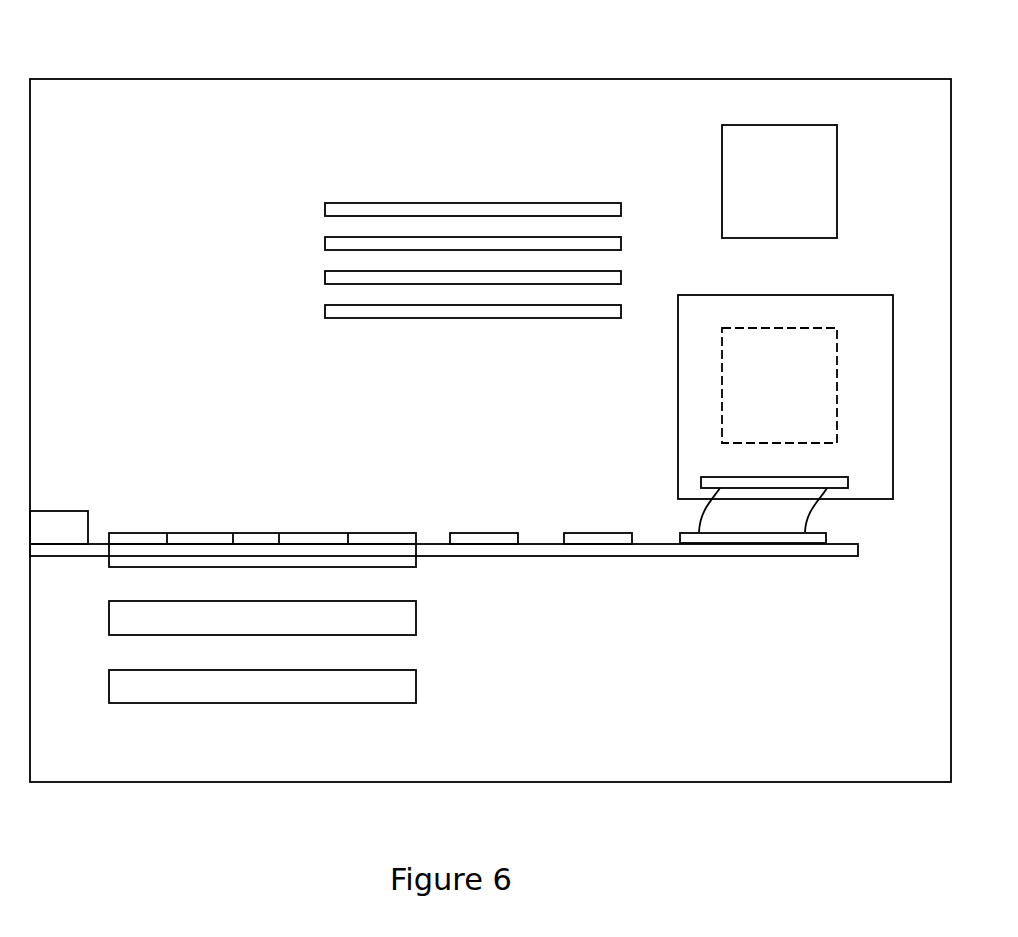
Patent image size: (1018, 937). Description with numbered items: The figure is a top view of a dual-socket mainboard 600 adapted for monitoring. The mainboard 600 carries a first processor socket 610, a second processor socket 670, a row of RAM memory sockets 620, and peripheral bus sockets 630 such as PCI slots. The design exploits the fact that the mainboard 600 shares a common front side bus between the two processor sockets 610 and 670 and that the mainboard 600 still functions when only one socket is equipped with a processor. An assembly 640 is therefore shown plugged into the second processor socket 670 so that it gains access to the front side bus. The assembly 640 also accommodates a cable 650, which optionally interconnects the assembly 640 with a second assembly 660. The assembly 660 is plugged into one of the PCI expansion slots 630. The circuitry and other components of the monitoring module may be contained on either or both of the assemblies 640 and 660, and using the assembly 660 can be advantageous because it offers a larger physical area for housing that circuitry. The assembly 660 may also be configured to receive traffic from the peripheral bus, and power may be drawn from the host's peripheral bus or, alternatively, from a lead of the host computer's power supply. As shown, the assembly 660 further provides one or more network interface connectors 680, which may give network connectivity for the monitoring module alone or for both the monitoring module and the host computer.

The dual-socket mainboard 600 is at (339, 78).
The first processor socket 610 is at (837, 157).
The RAM memory sockets 620 is at (312, 238).
The peripheral bus sockets 630 is at (403, 567).
The assembly 640 is at (893, 385).
The cable 650 is at (701, 511).
The assembly 660 is at (655, 556).
The second processor socket 670 is at (823, 328).
The network interface connectors 680 is at (74, 500).